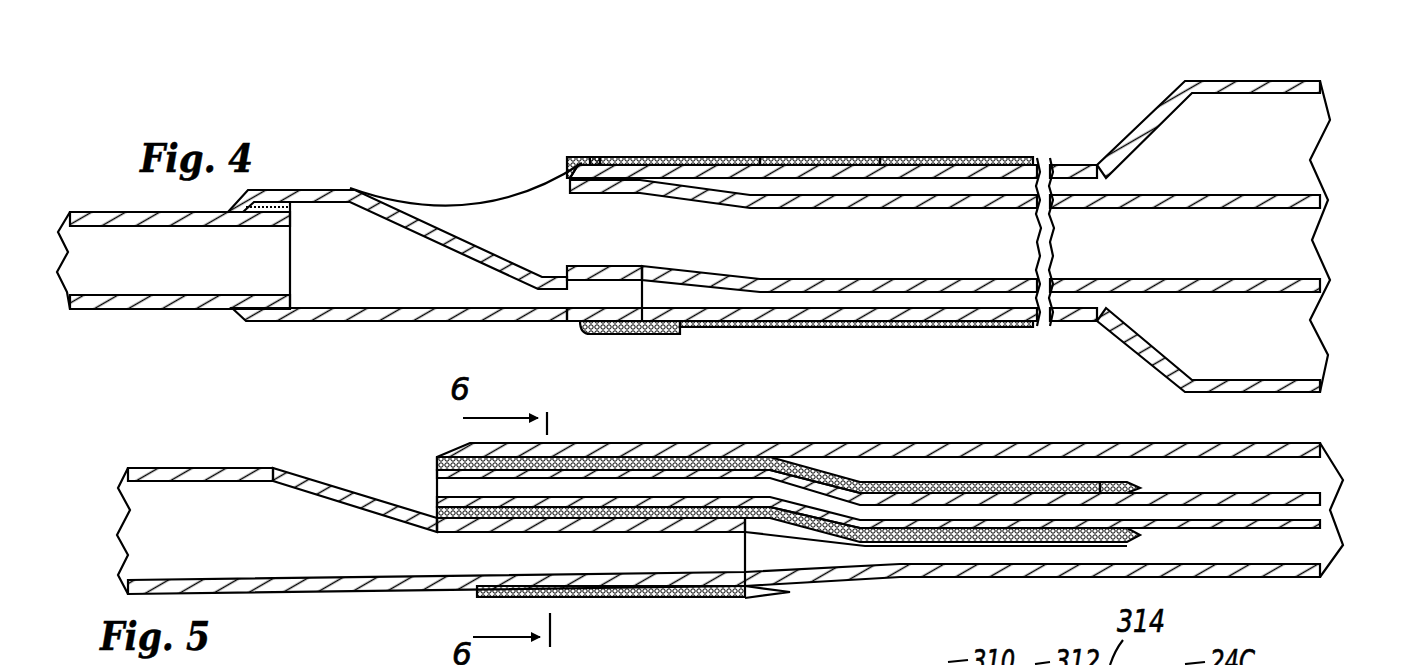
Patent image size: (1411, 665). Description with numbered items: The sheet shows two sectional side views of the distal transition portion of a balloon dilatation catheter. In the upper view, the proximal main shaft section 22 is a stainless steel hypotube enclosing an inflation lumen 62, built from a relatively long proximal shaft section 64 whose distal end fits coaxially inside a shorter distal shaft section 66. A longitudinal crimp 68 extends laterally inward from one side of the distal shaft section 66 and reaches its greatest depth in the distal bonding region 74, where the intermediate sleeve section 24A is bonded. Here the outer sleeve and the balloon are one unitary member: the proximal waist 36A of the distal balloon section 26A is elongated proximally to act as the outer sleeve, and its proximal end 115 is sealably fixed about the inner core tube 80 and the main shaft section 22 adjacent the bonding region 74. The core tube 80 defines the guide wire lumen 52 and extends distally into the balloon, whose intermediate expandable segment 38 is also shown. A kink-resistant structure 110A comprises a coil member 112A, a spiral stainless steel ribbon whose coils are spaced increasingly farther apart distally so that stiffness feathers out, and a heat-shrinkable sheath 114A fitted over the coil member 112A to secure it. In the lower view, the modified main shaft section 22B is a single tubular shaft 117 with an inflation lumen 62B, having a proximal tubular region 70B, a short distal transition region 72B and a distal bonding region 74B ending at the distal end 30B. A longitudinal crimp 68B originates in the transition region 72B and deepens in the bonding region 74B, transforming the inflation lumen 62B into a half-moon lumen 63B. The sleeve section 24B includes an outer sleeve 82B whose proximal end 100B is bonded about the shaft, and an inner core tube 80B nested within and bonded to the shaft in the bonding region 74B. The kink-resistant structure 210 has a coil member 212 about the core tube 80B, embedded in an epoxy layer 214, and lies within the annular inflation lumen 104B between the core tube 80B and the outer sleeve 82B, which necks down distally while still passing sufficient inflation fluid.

In FIG. 4, the proximal main shaft section 22 is at (152, 313).
In FIG. 4, the inflation lumen 62 is at (128, 273).
In FIG. 4, the proximal shaft section 64 is at (212, 300).
In FIG. 4, the distal shaft section 66 is at (393, 308).
In FIG. 4, the longitudinal crimp 68 is at (455, 220).
In FIG. 4, the distal bonding region 74 is at (565, 283).
In FIG. 4, the proximal end of proximal waist 115 is at (582, 163).
In FIG. 4, the guide wire lumen 52 is at (797, 265).
In FIG. 4, the inner core tube 80 is at (872, 212).
In FIG. 4, the heat-shrinkable sheath 114A is at (690, 157).
In FIG. 4, the kink-resistant structure 110A is at (788, 153).
In FIG. 4, the coil member 112A is at (880, 150).
In FIG. 4, the proximal waist 36A is at (1062, 130).
In FIG. 4, the intermediate sleeve section 24A is at (1058, 110).
In FIG. 4, the distal balloon section 26A is at (1225, 82).
In FIG. 4, the intermediate expandable segment 38 is at (1255, 95).
In FIG. 5, the inflation lumen 62B is at (226, 567).
In FIG. 5, the proximal tubular region 70B is at (160, 481).
In FIG. 5, the distal transition region 72B is at (330, 508).
In FIG. 5, the main shaft section 22B is at (250, 598).
In FIG. 5, the single tubular shaft 117 is at (310, 592).
In FIG. 5, the proximal end of outer sleeve 100B is at (495, 598).
In FIG. 5, the half-moon lumen 63B is at (748, 587).
In FIG. 5, the distal end 30B is at (755, 548).
In FIG. 5, the longitudinal crimp 68B is at (395, 492).
In FIG. 5, the outer sleeve 82B is at (1292, 443).
In FIG. 5, the kink-resistant structure 210 is at (862, 480).
In FIG. 5, the coil member 212 is at (905, 492).
In FIG. 5, the epoxy layer 214 is at (1130, 482).
In FIG. 5, the inner core tube 80B is at (1242, 493).
In FIG. 5, the annular inflation lumen 104B is at (1272, 558).
In FIG. 5, the distal bonding region 74B is at (578, 533).
In FIG. 5, the sleeve section 24B is at (1114, 425).